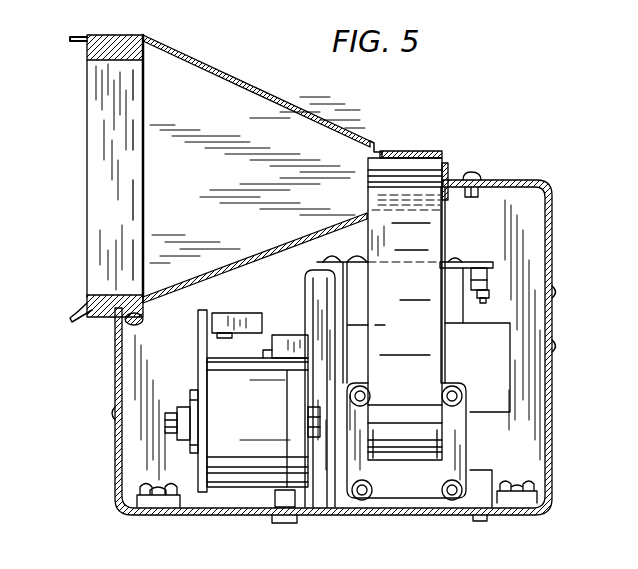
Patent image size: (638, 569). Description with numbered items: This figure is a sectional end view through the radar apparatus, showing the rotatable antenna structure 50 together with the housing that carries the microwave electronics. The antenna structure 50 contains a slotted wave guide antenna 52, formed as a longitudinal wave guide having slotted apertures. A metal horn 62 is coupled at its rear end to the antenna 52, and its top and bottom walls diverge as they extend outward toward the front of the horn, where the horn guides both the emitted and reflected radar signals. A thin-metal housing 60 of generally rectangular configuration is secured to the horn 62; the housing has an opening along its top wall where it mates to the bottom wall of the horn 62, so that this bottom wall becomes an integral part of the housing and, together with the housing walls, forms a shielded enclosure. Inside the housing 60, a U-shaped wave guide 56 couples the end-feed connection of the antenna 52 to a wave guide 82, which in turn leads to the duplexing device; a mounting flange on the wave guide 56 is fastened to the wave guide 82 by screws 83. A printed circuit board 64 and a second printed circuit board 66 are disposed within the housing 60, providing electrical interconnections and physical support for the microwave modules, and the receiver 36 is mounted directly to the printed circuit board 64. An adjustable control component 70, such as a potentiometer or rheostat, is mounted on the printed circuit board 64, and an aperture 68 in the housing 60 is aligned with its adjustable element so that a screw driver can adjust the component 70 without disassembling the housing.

The receiver 36 is at (360, 305).
The rotatable antenna structure 50 is at (80, 156).
The slotted wave guide antenna 52 is at (411, 160).
The U-shaped wave guide 56 is at (446, 221).
The housing 60 is at (555, 271).
The horn 62 is at (296, 112).
The printed circuit board 64 is at (487, 265).
The printed circuit board 66 is at (200, 340).
The aperture 68 is at (554, 295).
The adjustable control component 70 is at (485, 294).
The wave guide 82 is at (462, 446).
The screws 83 is at (440, 392).